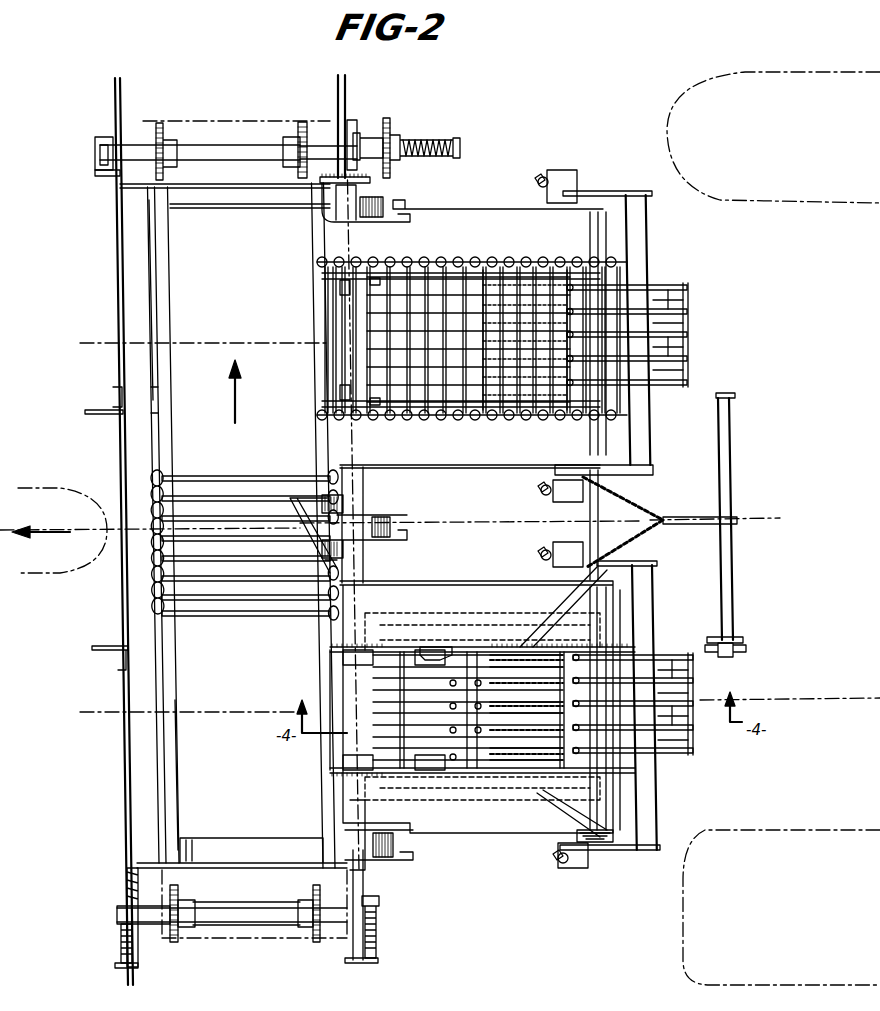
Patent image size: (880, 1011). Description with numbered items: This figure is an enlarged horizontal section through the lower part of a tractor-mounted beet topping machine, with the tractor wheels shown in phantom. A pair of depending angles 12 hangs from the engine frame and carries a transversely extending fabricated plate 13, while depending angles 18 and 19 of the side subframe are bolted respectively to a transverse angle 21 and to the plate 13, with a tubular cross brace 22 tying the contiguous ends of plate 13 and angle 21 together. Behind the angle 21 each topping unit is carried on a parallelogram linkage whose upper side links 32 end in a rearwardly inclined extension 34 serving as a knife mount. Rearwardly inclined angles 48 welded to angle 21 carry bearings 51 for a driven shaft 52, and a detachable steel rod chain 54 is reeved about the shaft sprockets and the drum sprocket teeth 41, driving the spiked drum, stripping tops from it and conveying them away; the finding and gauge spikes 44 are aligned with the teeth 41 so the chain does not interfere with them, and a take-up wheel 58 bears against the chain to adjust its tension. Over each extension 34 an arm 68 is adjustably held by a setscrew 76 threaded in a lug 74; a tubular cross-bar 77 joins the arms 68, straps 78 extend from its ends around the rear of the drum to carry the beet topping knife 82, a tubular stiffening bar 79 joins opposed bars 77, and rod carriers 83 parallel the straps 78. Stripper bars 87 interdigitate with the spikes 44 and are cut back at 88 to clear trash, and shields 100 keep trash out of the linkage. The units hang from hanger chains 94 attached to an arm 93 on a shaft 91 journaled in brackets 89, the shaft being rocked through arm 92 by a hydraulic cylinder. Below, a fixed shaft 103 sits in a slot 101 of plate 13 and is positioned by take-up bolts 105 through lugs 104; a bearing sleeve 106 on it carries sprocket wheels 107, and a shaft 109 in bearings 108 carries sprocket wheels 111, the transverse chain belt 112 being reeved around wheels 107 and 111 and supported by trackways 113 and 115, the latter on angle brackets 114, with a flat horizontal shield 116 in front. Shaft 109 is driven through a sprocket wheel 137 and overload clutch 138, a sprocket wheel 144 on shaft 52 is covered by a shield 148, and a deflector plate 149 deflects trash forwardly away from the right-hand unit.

The depending angles 12 is at (103, 413).
The fabricated plate 13 is at (125, 780).
The depending angle 18 is at (360, 133).
The depending angle 19 is at (108, 178).
The angle 21 is at (360, 888).
The tubular cross brace 22 is at (270, 828).
The side parallelogram links 32 is at (416, 622).
The extension 34 is at (603, 843).
The sprocket teeth 41 is at (495, 647).
The beet finding and gauge spikes 44 is at (510, 665).
The rearwardly inclined angles 48 is at (408, 212).
The bearings 51 is at (338, 208).
The driven shaft 52 is at (332, 693).
The detachable steel rod chain 54 is at (503, 258).
The take-up wheel 58 is at (445, 640).
The arm 68 is at (640, 562).
The lug 74 is at (576, 178).
The setscrew 76 is at (556, 860).
The tubular cross-bar 77 is at (648, 250).
The strap 78 is at (614, 195).
The tubular stiffening bar 79 is at (678, 332).
The beet topping knife 82 is at (598, 770).
The rod carriers 83 is at (688, 362).
The stripper bar 87 is at (430, 310).
The cut back 88 is at (466, 660).
The brackets 89 is at (732, 396).
The shaft 91 is at (730, 488).
The arm 92 is at (707, 637).
The arm 93 is at (690, 518).
The hanger chains 94 is at (620, 500).
The shields 100 is at (472, 212).
The slot 101 is at (127, 890).
The fixed shaft 103 is at (120, 915).
The lugs 104 is at (118, 965).
The take-up bolts 105 is at (122, 942).
The bearing sleeve 106 is at (236, 910).
The sprocket wheel 107 is at (176, 943).
The bearings 108 is at (104, 137).
The shaft 109 is at (140, 145).
The sprocket wheels 111 is at (163, 130).
The detachable link chain belt 112 is at (236, 478).
The trackway 113 is at (322, 793).
The angle brackets 114 is at (153, 197).
The trackway 115 is at (175, 748).
The flat horizontal shield 116 is at (142, 280).
The sprocket wheel 137 is at (388, 118).
The overload clutch 138 is at (400, 135).
The sprocket wheel 144 is at (373, 183).
The shield 148 is at (322, 182).
The deflector plate 149 is at (297, 490).